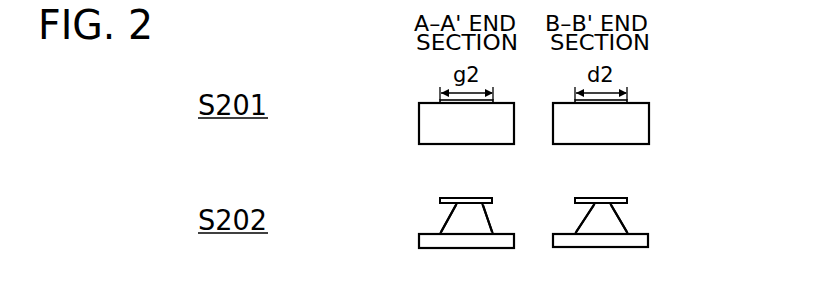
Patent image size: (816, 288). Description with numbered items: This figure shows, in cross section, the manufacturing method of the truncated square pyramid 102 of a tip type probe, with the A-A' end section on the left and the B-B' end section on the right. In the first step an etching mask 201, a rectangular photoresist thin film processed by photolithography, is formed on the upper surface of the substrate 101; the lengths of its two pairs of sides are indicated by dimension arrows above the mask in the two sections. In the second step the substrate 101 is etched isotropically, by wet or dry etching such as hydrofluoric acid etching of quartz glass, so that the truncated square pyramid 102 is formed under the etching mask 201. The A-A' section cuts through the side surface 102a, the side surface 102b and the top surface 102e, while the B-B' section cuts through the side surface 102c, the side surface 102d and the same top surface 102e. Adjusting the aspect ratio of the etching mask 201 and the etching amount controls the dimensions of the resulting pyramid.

The substrate 101 is at (428, 125).
The etching mask 201 is at (440, 101).
The truncated square pyramid 102 is at (462, 227).
The side surface 102a is at (442, 228).
The side surface 102b is at (488, 223).
The side surface 102c is at (584, 222).
The side surface 102d is at (628, 229).
The top surface 102e is at (467, 207).